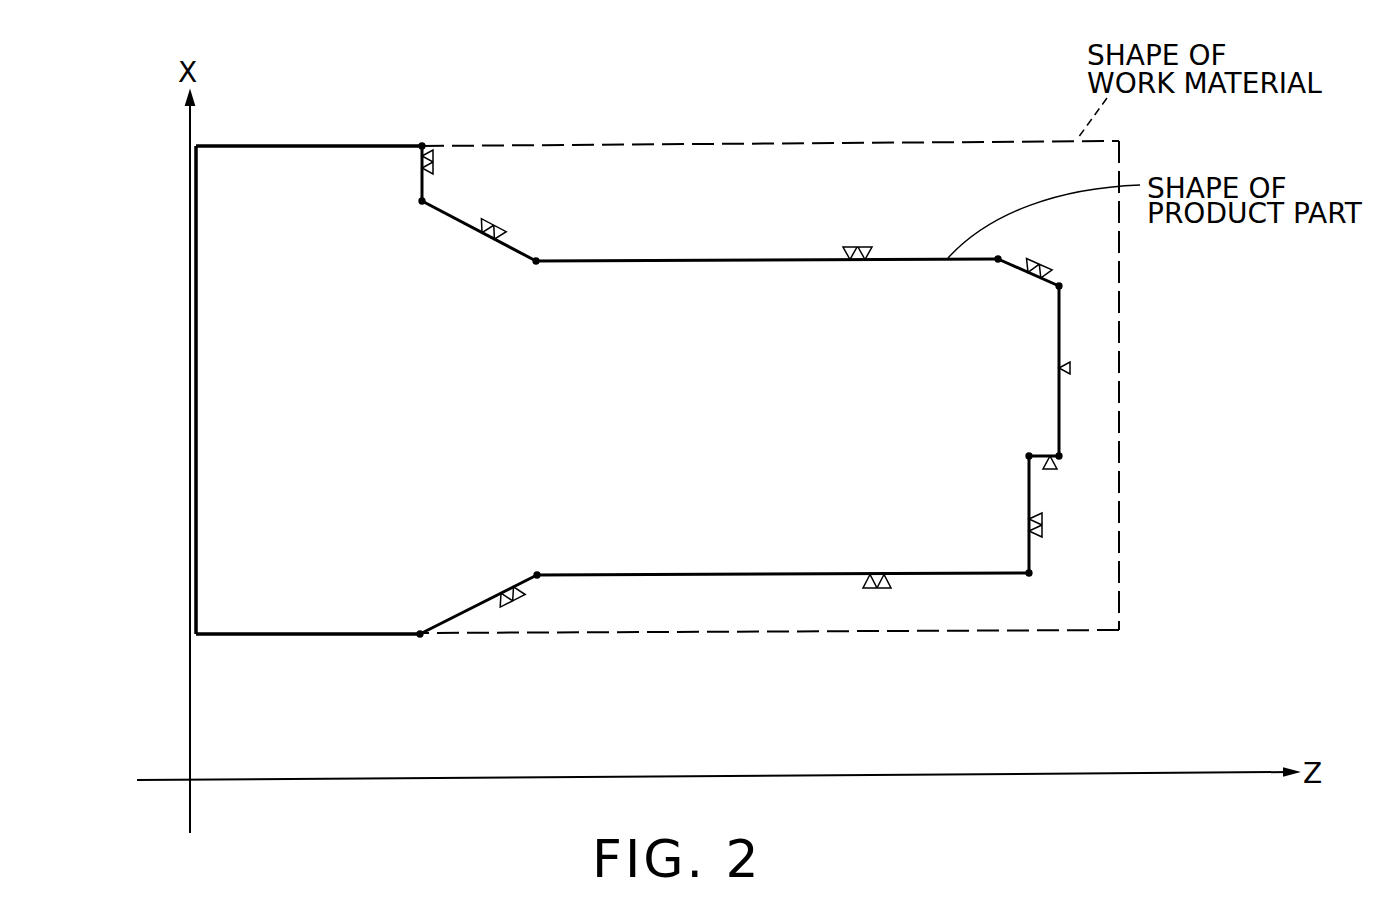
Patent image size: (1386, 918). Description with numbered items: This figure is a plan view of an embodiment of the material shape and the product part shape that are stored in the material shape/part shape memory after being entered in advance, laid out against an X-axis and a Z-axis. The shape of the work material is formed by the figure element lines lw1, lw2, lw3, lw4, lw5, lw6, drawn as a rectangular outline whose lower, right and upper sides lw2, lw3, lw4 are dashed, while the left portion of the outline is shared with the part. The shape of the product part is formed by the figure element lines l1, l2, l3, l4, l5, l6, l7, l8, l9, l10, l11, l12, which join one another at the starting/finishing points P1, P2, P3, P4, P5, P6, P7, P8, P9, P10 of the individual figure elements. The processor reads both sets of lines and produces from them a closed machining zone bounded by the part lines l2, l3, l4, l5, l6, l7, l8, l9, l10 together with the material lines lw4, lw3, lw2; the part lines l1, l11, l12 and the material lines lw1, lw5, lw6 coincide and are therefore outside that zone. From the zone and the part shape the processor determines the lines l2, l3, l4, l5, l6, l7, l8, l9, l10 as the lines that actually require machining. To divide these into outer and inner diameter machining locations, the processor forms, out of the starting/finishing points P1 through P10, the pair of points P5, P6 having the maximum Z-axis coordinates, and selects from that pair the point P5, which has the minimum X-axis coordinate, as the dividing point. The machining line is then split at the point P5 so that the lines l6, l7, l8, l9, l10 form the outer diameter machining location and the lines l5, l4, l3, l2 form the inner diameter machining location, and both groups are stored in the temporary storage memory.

The starting/finishing point P1 is at (417, 616).
The starting/finishing point P2 is at (545, 559).
The starting/finishing point P3 is at (1048, 587).
The starting/finishing point P4 is at (1033, 465).
The starting/finishing point P5 is at (1062, 455).
The starting/finishing point P6 is at (1079, 287).
The starting/finishing point P7 is at (1009, 242).
The starting/finishing point P8 is at (557, 245).
The starting/finishing point P9 is at (445, 192).
The starting/finishing point P10 is at (443, 129).
The figure element line l1 is at (308, 620).
The figure element line l2 is at (478, 603).
The figure element line l3 is at (783, 565).
The figure element line l4 is at (1014, 514).
The figure element line l5 is at (1040, 445).
The figure element line l6 is at (1042, 371).
The figure element line l7 is at (1028, 286).
The figure element line l8 is at (767, 273).
The figure element line l9 is at (479, 237).
The figure element line l10 is at (400, 173).
The figure element line l11 is at (309, 165).
The figure element line l12 is at (224, 390).
The figure element line lw1 is at (308, 654).
The figure element line lw2 is at (769, 651).
The figure element line lw3 is at (1148, 385).
The figure element line lw4 is at (770, 128).
The figure element line lw5 is at (309, 130).
The figure element line lw6 is at (160, 390).